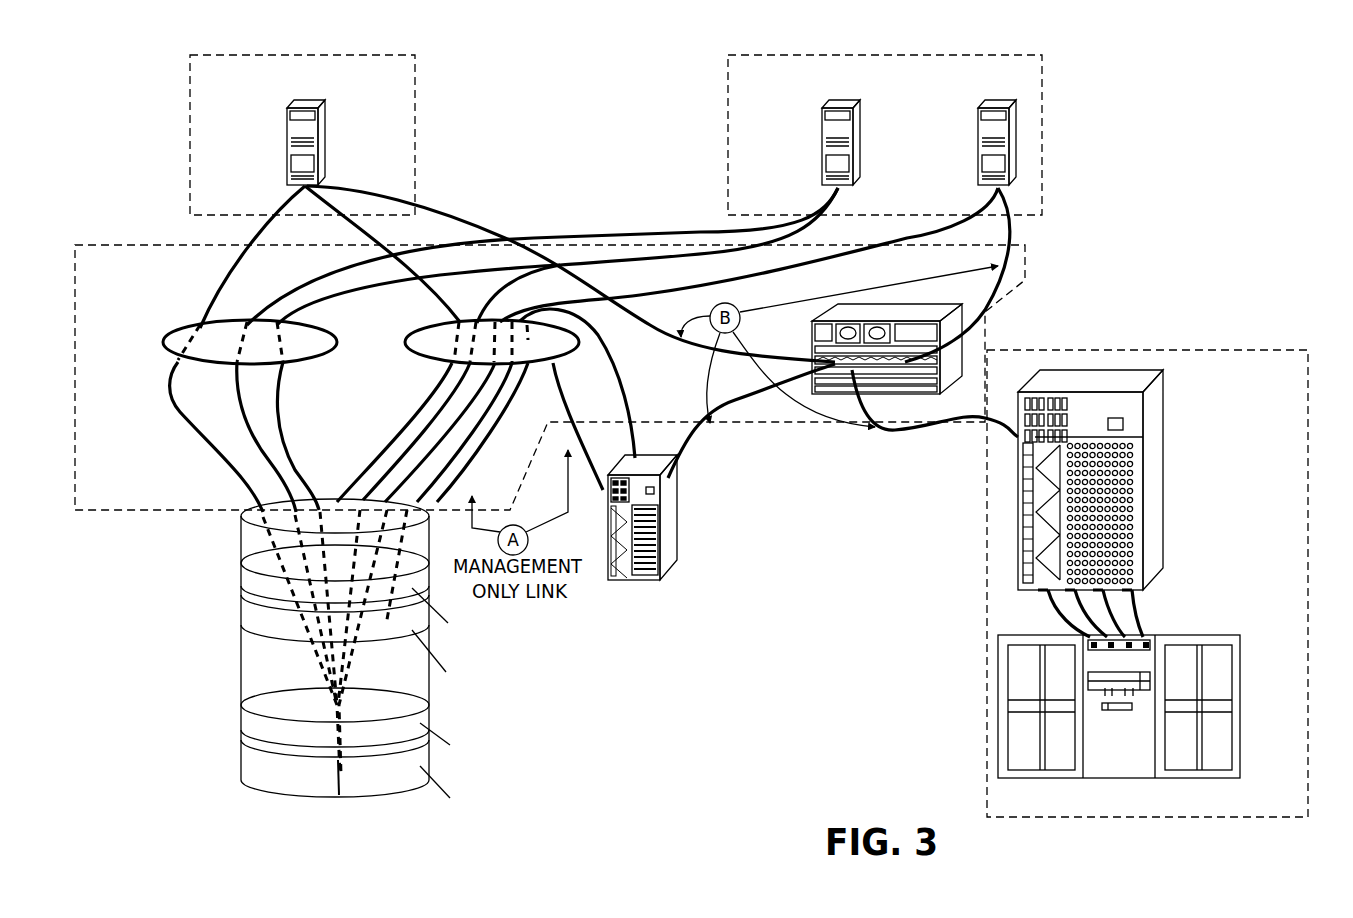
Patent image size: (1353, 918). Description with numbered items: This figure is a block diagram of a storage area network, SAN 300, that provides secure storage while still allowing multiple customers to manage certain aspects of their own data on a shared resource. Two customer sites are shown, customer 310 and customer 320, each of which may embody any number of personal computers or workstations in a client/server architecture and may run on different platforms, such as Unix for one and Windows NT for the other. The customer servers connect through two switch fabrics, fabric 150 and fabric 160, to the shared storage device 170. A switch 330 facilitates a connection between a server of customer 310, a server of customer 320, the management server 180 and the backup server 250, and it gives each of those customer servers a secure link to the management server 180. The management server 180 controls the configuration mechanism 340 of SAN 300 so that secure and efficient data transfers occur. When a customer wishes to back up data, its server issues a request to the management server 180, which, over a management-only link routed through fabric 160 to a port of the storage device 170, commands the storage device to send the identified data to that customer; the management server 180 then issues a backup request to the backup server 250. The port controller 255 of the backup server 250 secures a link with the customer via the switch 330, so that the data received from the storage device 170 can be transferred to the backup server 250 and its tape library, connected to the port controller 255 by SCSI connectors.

The SAN 300 is at (762, 841).
The customer 310 is at (416, 113).
The customer 320 is at (1043, 113).
The configuration mechanism 340 is at (92, 245).
The fabric 150 is at (180, 322).
The fabric 160 is at (424, 330).
The switch 330 is at (840, 397).
The management server 180 is at (677, 526).
The storage device 170 is at (403, 790).
The backup server 250 is at (1308, 610).
The port controller 255 is at (1165, 464).